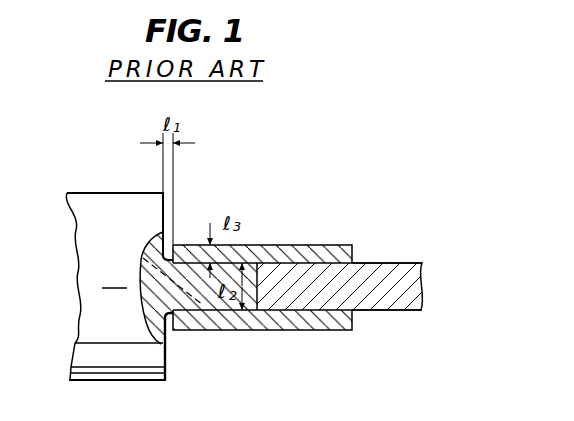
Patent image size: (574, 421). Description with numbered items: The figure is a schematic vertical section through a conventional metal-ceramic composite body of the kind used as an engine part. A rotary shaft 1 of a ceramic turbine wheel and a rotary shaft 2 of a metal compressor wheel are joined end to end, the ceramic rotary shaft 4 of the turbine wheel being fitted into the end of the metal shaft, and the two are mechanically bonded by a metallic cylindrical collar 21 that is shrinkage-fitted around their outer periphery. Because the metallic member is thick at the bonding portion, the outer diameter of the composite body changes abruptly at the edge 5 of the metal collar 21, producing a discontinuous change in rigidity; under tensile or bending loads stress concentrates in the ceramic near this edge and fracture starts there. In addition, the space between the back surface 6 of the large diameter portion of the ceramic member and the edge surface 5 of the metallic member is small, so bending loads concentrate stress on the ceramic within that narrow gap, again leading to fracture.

The rotary shaft of ceramic turbine wheel 1 is at (105, 206).
The rotary shaft of metal compressor wheel 2 is at (398, 300).
The rotary shaft of turbine wheel 4 is at (257, 264).
The edge of metal collar 5 is at (173, 322).
The back surface of large diameter portion of ceramic member 6 is at (167, 362).
The metallic cylindrical collar 21 is at (351, 244).